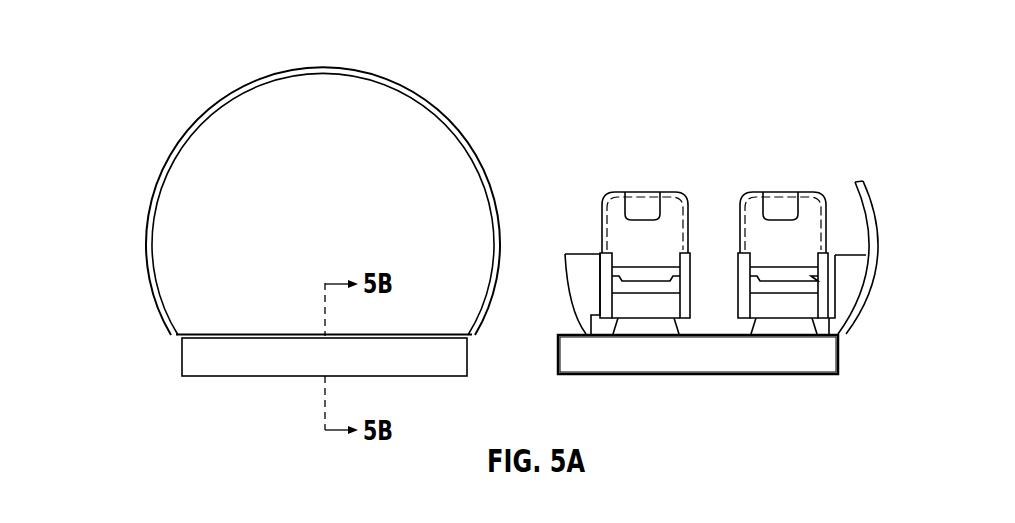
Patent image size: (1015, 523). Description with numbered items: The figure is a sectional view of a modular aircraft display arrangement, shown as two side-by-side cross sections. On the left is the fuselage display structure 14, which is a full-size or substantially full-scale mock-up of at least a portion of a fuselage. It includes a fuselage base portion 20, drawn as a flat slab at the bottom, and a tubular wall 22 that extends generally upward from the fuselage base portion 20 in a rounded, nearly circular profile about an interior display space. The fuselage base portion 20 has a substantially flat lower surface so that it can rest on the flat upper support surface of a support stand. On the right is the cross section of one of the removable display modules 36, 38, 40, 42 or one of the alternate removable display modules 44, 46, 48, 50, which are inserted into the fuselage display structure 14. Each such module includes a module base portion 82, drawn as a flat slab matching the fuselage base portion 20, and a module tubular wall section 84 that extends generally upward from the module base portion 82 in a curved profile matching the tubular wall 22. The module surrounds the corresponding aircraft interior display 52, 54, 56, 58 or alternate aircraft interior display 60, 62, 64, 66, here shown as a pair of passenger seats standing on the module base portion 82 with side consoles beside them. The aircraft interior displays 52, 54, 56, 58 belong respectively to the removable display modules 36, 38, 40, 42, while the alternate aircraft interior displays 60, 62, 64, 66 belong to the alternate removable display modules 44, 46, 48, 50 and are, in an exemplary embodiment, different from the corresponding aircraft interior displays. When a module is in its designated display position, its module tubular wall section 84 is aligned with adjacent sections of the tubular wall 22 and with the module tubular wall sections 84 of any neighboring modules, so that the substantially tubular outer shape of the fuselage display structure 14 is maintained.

The fuselage display structure 14 is at (396, 83).
The tubular wall 22 is at (204, 114).
The fuselage base portion 20 is at (193, 355).
The aircraft interior display 52 is at (766, 223).
The aircraft interior display 54 is at (766, 223).
The aircraft interior display 56 is at (766, 223).
The aircraft interior display 58 is at (766, 223).
The alternate aircraft interior display 60 is at (766, 223).
The alternate aircraft interior display 62 is at (766, 223).
The alternate aircraft interior display 64 is at (766, 223).
The alternate aircraft interior display 66 is at (814, 142).
The module tubular wall section 84 is at (870, 200).
The module base portion 82 is at (840, 352).
The removable display module 36 is at (742, 389).
The removable display module 38 is at (742, 389).
The removable display module 40 is at (742, 389).
The removable display module 42 is at (742, 389).
The alternate removable display module 44 is at (742, 389).
The alternate removable display module 46 is at (742, 389).
The alternate removable display module 48 is at (742, 389).
The alternate removable display module 50 is at (790, 375).